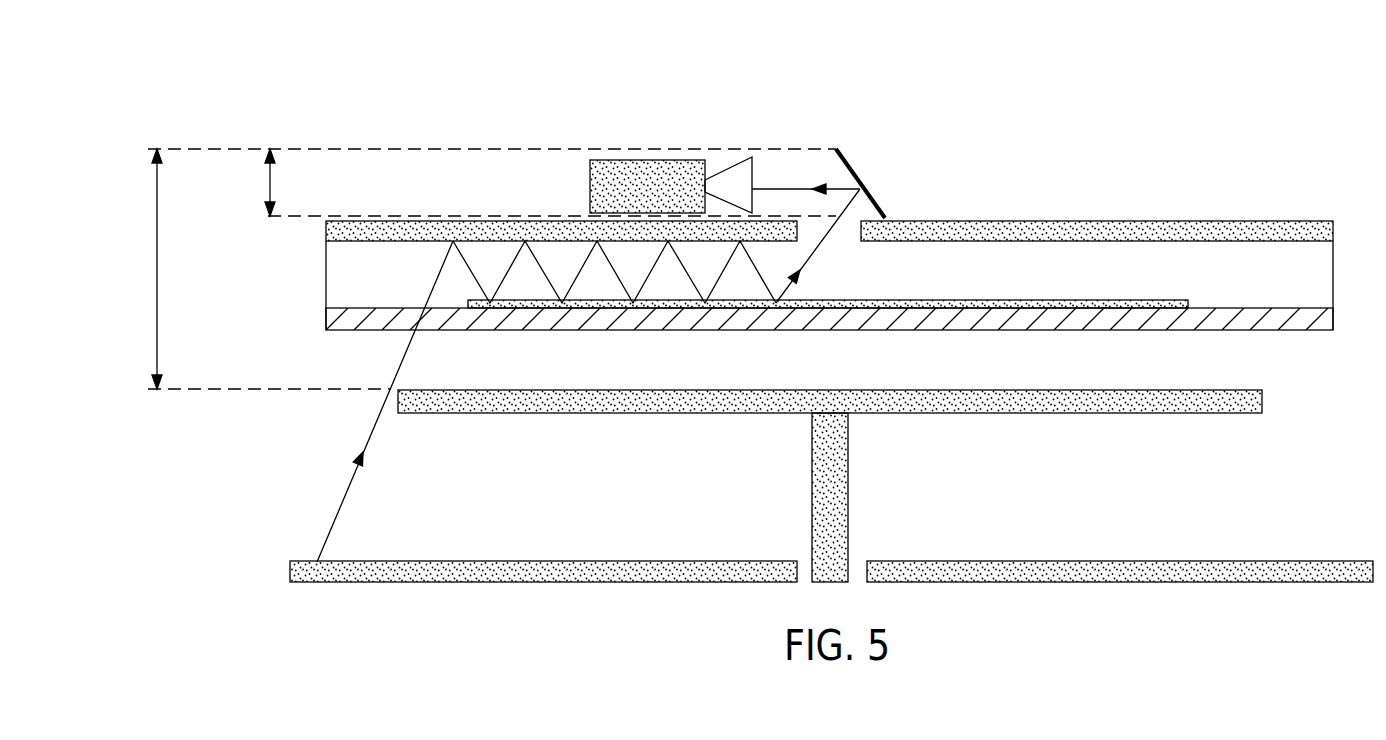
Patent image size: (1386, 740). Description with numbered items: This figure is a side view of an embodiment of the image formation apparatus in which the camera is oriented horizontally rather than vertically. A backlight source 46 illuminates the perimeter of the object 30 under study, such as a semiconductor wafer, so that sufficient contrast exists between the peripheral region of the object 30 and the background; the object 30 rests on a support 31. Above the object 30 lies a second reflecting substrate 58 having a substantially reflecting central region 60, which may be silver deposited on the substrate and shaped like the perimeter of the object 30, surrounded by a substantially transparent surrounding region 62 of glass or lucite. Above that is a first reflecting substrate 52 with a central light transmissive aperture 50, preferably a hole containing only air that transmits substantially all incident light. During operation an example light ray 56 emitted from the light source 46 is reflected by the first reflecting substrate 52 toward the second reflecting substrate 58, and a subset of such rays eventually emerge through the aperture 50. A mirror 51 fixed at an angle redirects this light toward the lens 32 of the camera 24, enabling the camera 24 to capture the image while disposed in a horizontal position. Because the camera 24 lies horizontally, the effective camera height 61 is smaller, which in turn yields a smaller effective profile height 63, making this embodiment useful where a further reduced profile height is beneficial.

The camera 24 is at (657, 165).
The object 30 is at (1173, 389).
The support 31 is at (812, 452).
The lens 32 is at (730, 168).
The backlight source 46 is at (508, 561).
The central light transmissive aperture 50 is at (861, 232).
The mirror 51 is at (860, 180).
The first reflecting substrate 52 is at (1138, 218).
The light ray 56 is at (358, 446).
The second reflecting substrate 58 is at (1308, 337).
The substantially reflecting central region 60 is at (1078, 300).
The effective camera height 61 is at (268, 177).
The substantially transparent surrounding region 62 is at (357, 307).
The effective profile height 63 is at (157, 333).